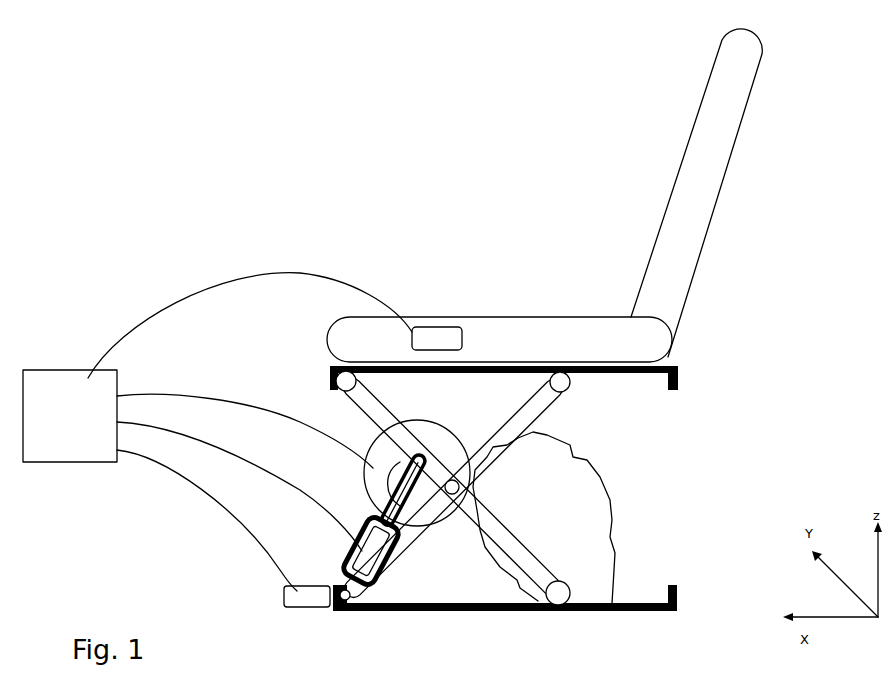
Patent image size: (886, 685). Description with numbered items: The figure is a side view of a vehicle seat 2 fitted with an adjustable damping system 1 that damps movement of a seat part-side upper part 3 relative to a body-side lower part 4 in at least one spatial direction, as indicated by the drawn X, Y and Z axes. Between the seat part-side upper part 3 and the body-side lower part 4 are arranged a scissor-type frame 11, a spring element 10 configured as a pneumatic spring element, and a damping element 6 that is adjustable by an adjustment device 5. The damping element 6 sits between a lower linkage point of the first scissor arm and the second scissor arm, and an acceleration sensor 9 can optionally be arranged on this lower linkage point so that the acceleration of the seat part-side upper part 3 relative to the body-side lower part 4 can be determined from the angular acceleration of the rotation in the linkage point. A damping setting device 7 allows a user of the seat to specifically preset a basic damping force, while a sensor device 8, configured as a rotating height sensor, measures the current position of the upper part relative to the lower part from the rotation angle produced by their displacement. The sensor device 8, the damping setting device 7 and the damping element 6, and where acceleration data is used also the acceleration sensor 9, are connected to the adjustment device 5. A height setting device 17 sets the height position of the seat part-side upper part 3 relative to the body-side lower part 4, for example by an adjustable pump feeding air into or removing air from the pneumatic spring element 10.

The damping system 1 is at (672, 512).
The vehicle seat 2 is at (392, 207).
The seat part-side upper part 3 is at (670, 361).
The body-side lower part 4 is at (632, 612).
The adjustment device 5 is at (87, 448).
The damping element 6 is at (370, 604).
The damping setting device 7 is at (456, 341).
The sensor device 8 is at (432, 512).
The acceleration sensor 9 is at (303, 605).
The spring element 10 is at (598, 498).
The scissor-type frame 11 is at (535, 392).
The height setting device 17 is at (445, 337).